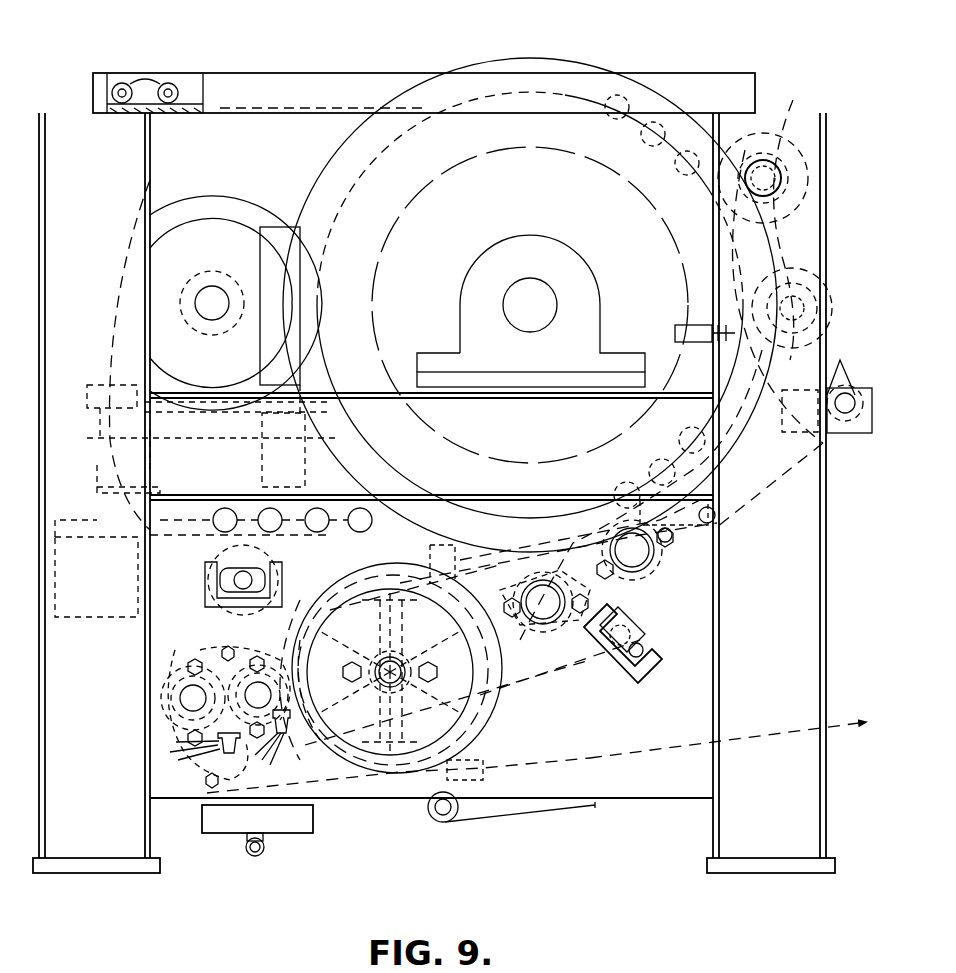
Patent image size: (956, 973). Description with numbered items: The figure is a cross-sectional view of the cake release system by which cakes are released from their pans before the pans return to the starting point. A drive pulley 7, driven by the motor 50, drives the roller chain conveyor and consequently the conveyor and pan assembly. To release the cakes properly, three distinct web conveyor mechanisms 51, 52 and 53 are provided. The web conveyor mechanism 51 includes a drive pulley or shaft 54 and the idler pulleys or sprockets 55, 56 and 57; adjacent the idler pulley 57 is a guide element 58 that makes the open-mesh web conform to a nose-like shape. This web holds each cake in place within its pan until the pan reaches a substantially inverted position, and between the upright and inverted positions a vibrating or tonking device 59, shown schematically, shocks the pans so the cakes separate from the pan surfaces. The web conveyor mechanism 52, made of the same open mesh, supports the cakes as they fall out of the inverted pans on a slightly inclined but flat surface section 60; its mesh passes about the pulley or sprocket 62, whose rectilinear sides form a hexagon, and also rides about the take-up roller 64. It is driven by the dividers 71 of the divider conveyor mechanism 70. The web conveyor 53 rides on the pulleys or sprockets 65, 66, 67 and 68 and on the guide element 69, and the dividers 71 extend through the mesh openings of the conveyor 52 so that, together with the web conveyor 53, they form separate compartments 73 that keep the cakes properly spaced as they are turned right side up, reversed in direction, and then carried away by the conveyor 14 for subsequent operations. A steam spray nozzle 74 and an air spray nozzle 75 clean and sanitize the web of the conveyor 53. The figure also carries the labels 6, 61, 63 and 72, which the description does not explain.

The drum 6 is at (578, 93).
The drive pulley 7 is at (527, 92).
The conveyor 14 is at (630, 752).
The motor 50 is at (225, 195).
The web conveyor mechanism 51 is at (818, 208).
The web conveyor mechanism 52 is at (536, 705).
The web conveyor 53 is at (347, 800).
The drive pulley or shaft 54 is at (772, 150).
The idler pulley or sprocket 55 is at (826, 400).
The idler pulley or sprocket 56 is at (852, 378).
The idler pulley or sprocket 57 is at (717, 524).
The guide element 58 is at (664, 484).
The vibrating or tonking device 59 is at (692, 325).
The flat surface section 60 is at (588, 495).
The sprocket 61 is at (648, 560).
The pulley or sprocket 62 is at (534, 601).
The spoked wheel 63 is at (372, 598).
The take-up roller 64 is at (642, 637).
The pulley or sprocket 65 is at (235, 560).
The pulley or sprocket 66 is at (210, 638).
The pulley or sprocket 67 is at (204, 710).
The pulley or sprocket 68 is at (196, 778).
The guide element 69 is at (433, 818).
The divider conveyor mechanism 70 is at (492, 575).
The dividers 71 is at (478, 575).
The wheel rim 72 is at (397, 657).
The separate compartments 73 is at (321, 613).
The steam spray nozzle 74 is at (287, 737).
The air spray nozzle 75 is at (232, 755).